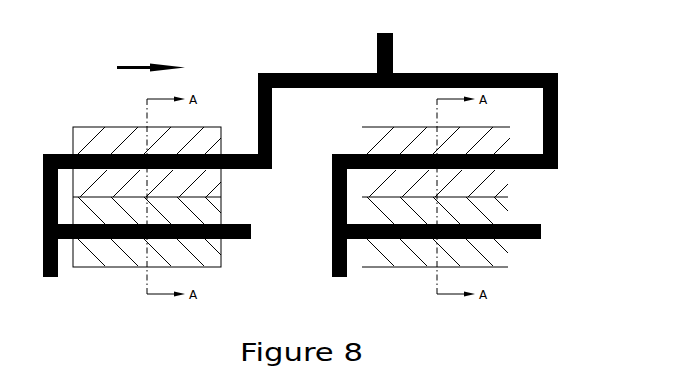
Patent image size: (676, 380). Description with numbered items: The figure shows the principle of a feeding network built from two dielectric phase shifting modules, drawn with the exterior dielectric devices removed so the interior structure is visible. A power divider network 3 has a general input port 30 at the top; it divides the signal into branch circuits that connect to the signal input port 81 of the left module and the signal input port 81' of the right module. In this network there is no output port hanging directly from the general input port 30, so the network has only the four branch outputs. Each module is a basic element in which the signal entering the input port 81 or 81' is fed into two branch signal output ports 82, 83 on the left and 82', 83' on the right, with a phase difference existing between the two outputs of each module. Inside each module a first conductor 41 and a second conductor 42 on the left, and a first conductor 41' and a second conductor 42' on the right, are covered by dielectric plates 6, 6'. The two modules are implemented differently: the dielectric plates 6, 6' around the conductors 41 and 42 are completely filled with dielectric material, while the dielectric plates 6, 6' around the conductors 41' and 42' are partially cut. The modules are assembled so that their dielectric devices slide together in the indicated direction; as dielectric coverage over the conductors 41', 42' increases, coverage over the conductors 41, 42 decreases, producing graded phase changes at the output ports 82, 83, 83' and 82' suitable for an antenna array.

The power divider network 3 is at (396, 75).
The general input port 30 is at (386, 44).
The dielectric plate 6 is at (123, 180).
The dielectric plate 6' is at (406, 181).
The first conductor 41 is at (160, 156).
The second conductor 42 is at (171, 239).
The signal input port 81 is at (167, 168).
The signal output port 82 is at (159, 232).
The signal output port 83 is at (52, 226).
The first conductor 41' is at (455, 161).
The second conductor 42' is at (462, 240).
The signal input port 81' is at (456, 168).
The signal output port 82' is at (449, 232).
The signal output port 83' is at (343, 226).